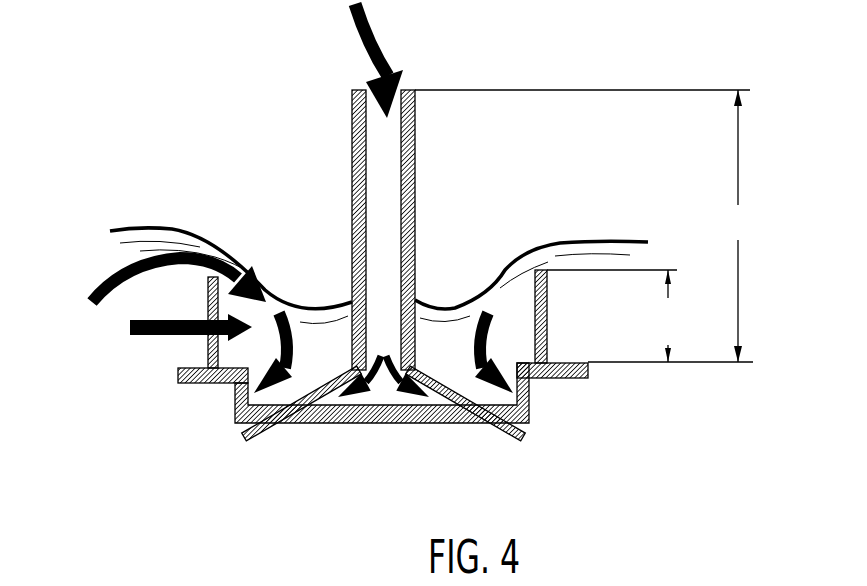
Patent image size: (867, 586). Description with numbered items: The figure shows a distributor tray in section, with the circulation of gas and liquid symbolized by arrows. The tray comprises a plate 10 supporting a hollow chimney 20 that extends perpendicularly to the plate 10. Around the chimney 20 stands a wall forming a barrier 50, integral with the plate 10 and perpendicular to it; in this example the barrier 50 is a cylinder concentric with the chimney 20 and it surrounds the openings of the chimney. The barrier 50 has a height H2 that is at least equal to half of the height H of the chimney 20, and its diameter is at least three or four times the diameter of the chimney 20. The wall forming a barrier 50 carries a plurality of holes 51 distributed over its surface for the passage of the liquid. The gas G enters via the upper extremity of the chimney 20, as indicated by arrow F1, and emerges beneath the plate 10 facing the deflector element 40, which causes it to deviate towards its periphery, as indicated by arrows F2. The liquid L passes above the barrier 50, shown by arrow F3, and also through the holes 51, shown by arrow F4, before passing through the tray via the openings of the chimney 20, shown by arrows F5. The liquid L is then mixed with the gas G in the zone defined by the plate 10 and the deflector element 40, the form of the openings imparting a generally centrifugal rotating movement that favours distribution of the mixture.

The plate 10 is at (565, 380).
The chimney 20 is at (415, 163).
The deflector element 40 is at (430, 417).
The wall forming a barrier 50 is at (207, 297).
The holes 51 is at (547, 323).
The gas G is at (381, 61).
The liquid L is at (588, 243).
The arrow of gas entering F1 is at (360, 30).
The arrows of gas deviation F2 is at (382, 380).
The arrow of liquid passing above barrier F3 is at (172, 266).
The arrow of liquid passing through holes F4 is at (143, 336).
The arrows of liquid through openings F5 is at (283, 352).
The height of the chimney H is at (584, 226).
The height of the wall forming a barrier H2 is at (614, 316).